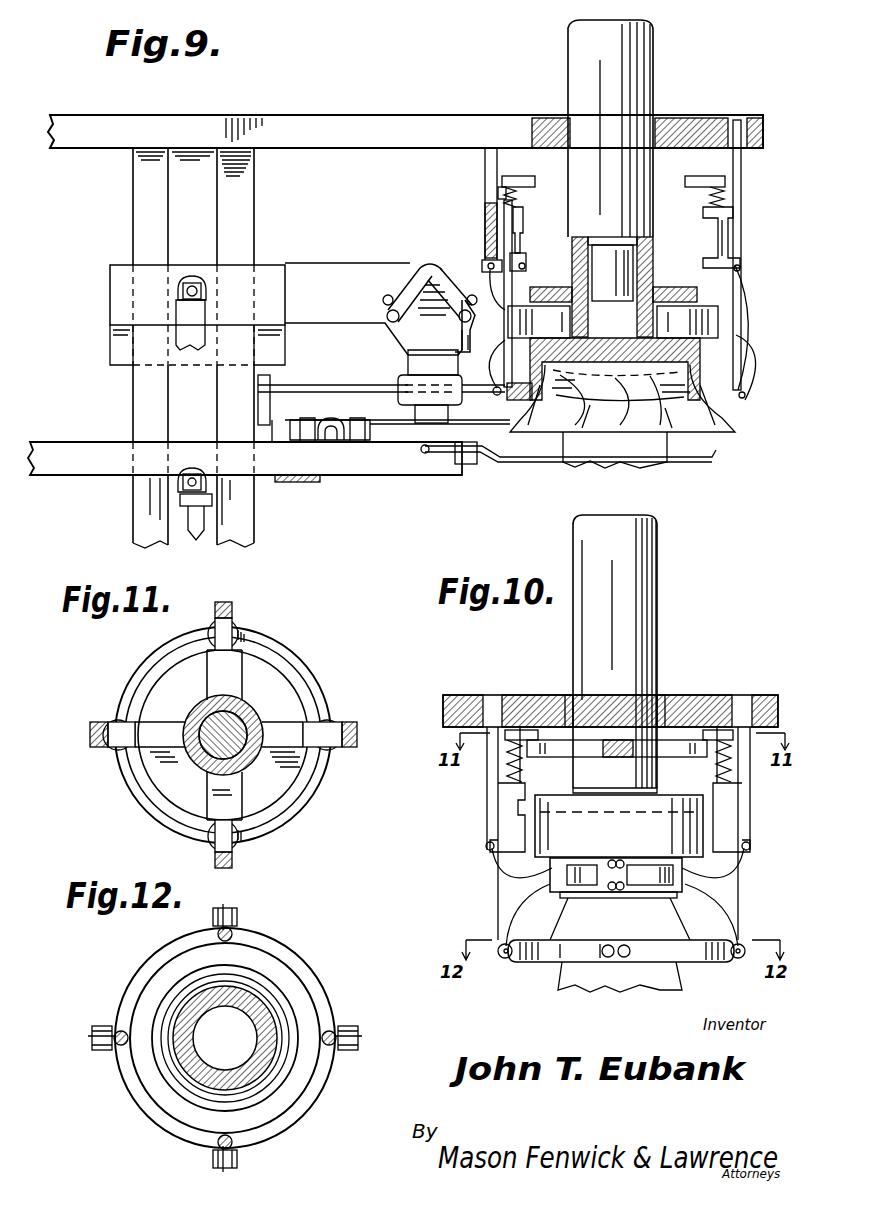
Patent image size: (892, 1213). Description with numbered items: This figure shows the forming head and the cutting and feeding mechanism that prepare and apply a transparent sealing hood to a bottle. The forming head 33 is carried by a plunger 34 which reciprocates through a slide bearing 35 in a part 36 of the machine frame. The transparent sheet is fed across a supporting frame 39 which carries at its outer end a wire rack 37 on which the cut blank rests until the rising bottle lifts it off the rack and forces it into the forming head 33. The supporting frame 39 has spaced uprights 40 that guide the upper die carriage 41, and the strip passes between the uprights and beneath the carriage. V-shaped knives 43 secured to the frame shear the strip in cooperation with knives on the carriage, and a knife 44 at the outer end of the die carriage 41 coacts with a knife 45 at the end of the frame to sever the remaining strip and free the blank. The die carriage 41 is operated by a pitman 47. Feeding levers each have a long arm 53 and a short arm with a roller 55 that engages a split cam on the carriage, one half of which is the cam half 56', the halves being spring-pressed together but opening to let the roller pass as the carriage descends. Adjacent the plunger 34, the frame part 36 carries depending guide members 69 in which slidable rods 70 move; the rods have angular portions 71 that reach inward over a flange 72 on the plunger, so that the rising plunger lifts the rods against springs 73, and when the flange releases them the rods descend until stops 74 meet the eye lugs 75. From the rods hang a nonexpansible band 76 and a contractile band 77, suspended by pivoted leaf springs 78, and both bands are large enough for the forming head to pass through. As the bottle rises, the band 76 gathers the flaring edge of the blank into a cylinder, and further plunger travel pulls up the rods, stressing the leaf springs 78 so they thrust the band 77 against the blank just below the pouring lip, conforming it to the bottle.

In FIG. 9, the forming head 33 is at (690, 352).
In FIG. 10, the forming head 33 is at (618, 895).
In FIG. 11, the forming head 33 is at (245, 716).
In FIG. 12, the forming head 33 is at (225, 1038).
In FIG. 9, the plunger 34 is at (575, 58).
In FIG. 10, the plunger 34 is at (580, 545).
In FIG. 11, the plunger 34 is at (205, 770).
In FIG. 9, the slide bearing 35 is at (562, 116).
In FIG. 10, the slide bearing 35 is at (562, 696).
In FIG. 9, the part of the frame 36 is at (388, 128).
In FIG. 10, the part of the frame 36 is at (470, 696).
In FIG. 9, the wire rack 37 is at (712, 458).
In FIG. 9, the supporting frame 39 is at (398, 462).
In FIG. 9, the uprights 40 is at (135, 222).
In FIG. 9, the upper die carriage 41 is at (338, 263).
In FIG. 9, the V-shaped knives 43 is at (120, 445).
In FIG. 9, the knife 44 is at (462, 362).
In FIG. 9, the knife 45 is at (464, 472).
In FIG. 9, the pitman 47 is at (190, 275).
In FIG. 9, the long arm 53 is at (364, 392).
In FIG. 9, the roller 55 is at (335, 420).
In FIG. 9, the cam half 56' is at (416, 276).
In FIG. 9, the guide members 69 is at (485, 212).
In FIG. 11, the guide members 69 is at (228, 606).
In FIG. 9, the slidable rods 70 is at (504, 236).
In FIG. 10, the slidable rods 70 is at (500, 820).
In FIG. 12, the slidable rods 70 is at (232, 934).
In FIG. 9, the angular portions 71 is at (530, 176).
In FIG. 10, the angular portions 71 is at (520, 730).
In FIG. 11, the angular portions 71 is at (233, 626).
In FIG. 9, the flange 72 is at (565, 298).
In FIG. 10, the flange 72 is at (585, 742).
In FIG. 11, the flange 72 is at (208, 690).
In FIG. 9, the springs 73 is at (500, 190).
In FIG. 9, the stops 74 is at (524, 258).
In FIG. 9, the eye lugs 75 is at (528, 268).
In FIG. 9, the band 76 is at (712, 400).
In FIG. 10, the band 76 is at (552, 930).
In FIG. 12, the band 76 is at (150, 956).
In FIG. 9, the band 77 is at (720, 318).
In FIG. 10, the band 77 is at (550, 886).
In FIG. 9, the leaf springs 78 is at (742, 278).
In FIG. 10, the leaf springs 78 is at (496, 872).
In FIG. 12, the leaf springs 78 is at (212, 912).